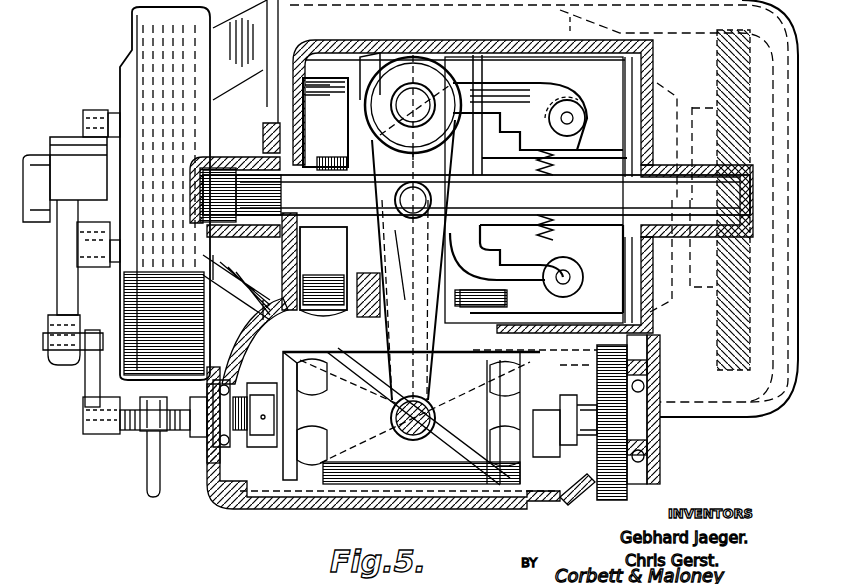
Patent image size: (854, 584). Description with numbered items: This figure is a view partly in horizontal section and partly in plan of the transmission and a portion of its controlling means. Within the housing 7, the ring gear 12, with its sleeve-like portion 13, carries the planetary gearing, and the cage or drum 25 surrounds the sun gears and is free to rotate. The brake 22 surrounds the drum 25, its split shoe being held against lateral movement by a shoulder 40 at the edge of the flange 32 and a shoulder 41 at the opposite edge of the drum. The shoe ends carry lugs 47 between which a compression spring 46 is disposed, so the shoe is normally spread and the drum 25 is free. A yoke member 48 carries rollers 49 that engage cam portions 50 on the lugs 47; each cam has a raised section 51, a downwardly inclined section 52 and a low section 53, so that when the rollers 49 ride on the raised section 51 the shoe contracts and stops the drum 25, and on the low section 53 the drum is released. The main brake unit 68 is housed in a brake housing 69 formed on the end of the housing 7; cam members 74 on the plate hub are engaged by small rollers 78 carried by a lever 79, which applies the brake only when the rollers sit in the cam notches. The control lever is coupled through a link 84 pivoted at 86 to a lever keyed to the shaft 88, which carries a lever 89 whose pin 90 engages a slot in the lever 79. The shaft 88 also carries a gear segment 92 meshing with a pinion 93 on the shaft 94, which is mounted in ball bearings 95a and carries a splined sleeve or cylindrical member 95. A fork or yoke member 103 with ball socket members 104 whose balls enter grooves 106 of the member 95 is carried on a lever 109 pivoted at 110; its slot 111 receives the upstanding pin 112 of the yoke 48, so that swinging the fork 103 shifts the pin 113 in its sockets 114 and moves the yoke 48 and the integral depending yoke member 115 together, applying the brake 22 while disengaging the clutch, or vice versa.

The housing 7 is at (757, 410).
The ring gear 12 is at (740, 42).
The sleeve-like portion 13 is at (692, 107).
The brake 22 is at (512, 10).
The cage or drum 25 is at (523, 228).
The flange 32 is at (370, 60).
The shoulder 40 is at (493, 158).
The shoulder 41 is at (625, 152).
The compression spring 46 is at (560, 190).
The lugs 47 is at (602, 243).
The yoke member 48 is at (463, 93).
The rollers 49 is at (583, 103).
The cam portions 50 is at (530, 130).
The raised section 51 is at (510, 132).
The downwardly inclined section 52 is at (560, 112).
The low section 53 is at (593, 147).
The main brake unit 68 is at (128, 40).
The brake housing 69 is at (200, 300).
The cam members 74 is at (122, 117).
The small rollers 78 is at (82, 117).
The lever 79 is at (62, 278).
The link 84 is at (152, 470).
The pivot 86 is at (145, 428).
The shaft 88 is at (80, 418).
The lever 89 is at (90, 383).
The pin 90 is at (47, 335).
The gear segment 92 is at (632, 365).
The pinion 93 is at (632, 425).
The shaft 94 is at (582, 447).
The sleeve or cylindrical member 95 is at (390, 462).
The ball bearings 95a is at (235, 450).
The fork or yoke member 103 is at (408, 365).
The ball socket members 104 is at (435, 418).
The grooves 106 is at (312, 470).
The lever 109 is at (370, 322).
The pivot 110 is at (400, 103).
The slot 111 is at (390, 178).
The upstanding pin 112 is at (357, 235).
The pin 113 is at (258, 225).
The sockets 114 is at (227, 190).
The depending yoke member 115 is at (340, 165).